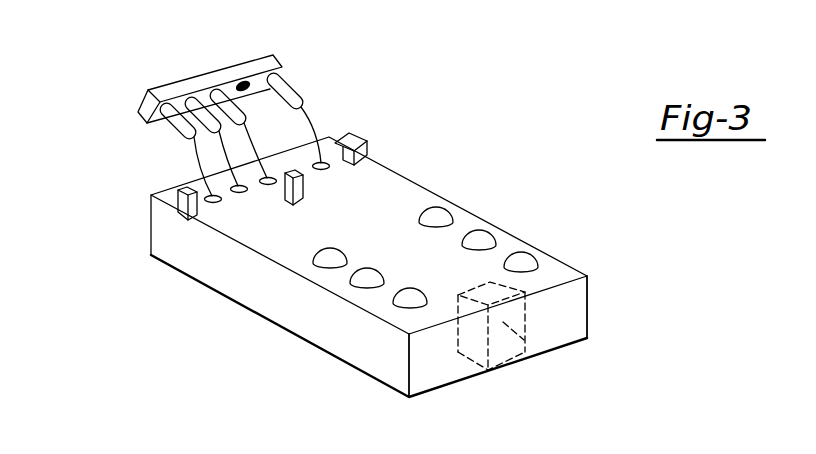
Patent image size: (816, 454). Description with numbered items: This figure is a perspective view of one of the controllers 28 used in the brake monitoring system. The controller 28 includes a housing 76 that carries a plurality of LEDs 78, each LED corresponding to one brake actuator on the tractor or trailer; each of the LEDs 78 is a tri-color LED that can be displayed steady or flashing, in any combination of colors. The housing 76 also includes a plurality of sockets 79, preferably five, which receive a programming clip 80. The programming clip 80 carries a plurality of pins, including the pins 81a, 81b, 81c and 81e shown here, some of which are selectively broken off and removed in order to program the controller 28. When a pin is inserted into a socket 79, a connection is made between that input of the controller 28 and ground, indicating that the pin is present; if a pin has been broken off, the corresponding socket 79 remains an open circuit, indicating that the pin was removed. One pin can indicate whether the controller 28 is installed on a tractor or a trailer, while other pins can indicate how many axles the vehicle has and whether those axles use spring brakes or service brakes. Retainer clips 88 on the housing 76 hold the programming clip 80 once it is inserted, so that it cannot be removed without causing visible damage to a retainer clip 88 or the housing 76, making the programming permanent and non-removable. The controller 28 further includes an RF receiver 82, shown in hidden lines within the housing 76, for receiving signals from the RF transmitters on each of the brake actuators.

The controller 28 is at (397, 170).
The housing 76 is at (228, 277).
The LEDs 78 is at (446, 212).
The sockets 79 is at (221, 200).
The programming clip 80 is at (208, 74).
The pin 81a is at (173, 128).
The pin 81b is at (192, 103).
The pin 81c is at (242, 116).
The pin 81e is at (288, 88).
The RF receiver 82 is at (535, 352).
The retainer clips 88 is at (183, 203).